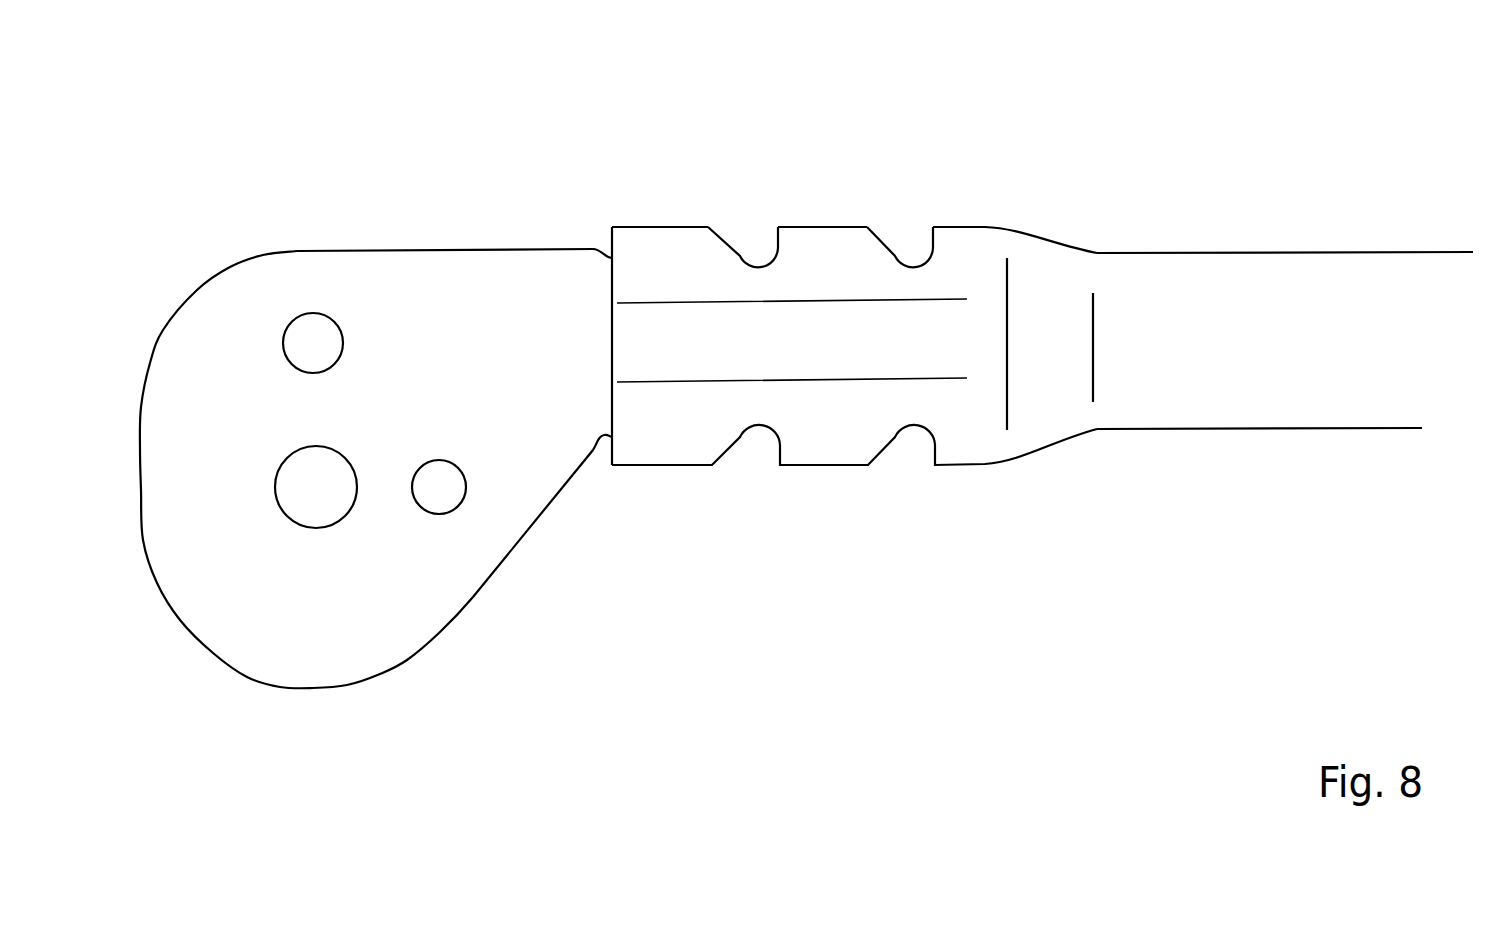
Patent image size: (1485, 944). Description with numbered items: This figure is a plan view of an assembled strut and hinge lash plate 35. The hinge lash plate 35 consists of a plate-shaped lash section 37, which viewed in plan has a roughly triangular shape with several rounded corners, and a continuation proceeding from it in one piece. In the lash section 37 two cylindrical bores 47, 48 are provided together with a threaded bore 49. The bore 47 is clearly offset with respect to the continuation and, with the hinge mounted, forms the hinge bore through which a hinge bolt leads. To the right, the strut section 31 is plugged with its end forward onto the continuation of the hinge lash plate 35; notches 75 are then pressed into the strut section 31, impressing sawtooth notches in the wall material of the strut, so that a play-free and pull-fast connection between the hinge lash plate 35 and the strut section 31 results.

The hinge lash plate 35 is at (396, 210).
The lash section 37 is at (247, 673).
The cylindrical bore 47 is at (290, 517).
The cylindrical bore 48 is at (335, 332).
The threaded bore 49 is at (444, 462).
The notch 75 is at (733, 245).
The left strut section 31 is at (1167, 252).